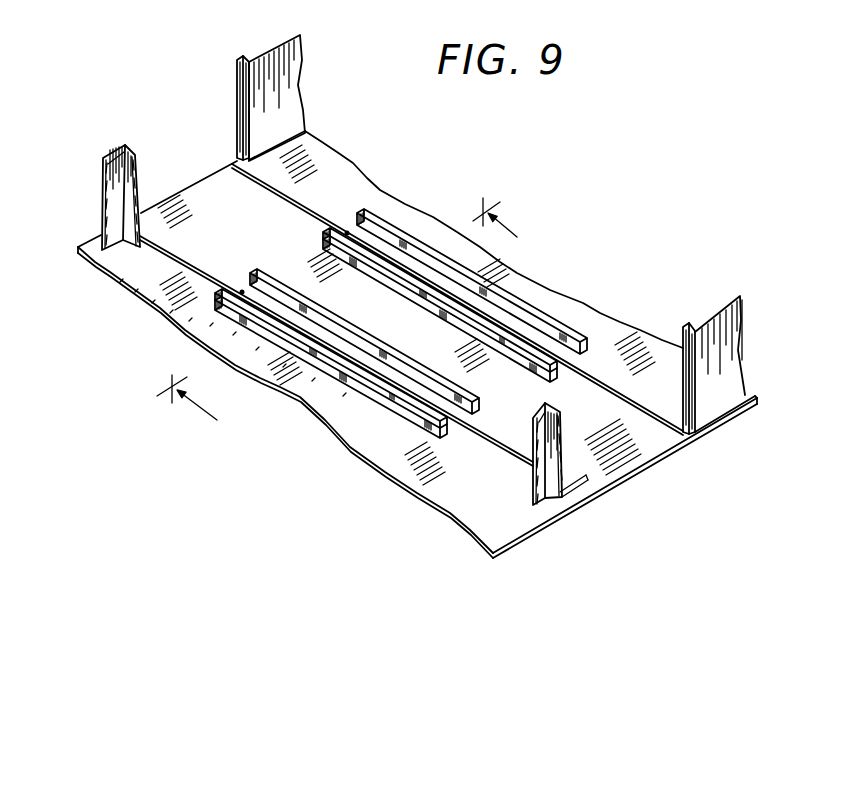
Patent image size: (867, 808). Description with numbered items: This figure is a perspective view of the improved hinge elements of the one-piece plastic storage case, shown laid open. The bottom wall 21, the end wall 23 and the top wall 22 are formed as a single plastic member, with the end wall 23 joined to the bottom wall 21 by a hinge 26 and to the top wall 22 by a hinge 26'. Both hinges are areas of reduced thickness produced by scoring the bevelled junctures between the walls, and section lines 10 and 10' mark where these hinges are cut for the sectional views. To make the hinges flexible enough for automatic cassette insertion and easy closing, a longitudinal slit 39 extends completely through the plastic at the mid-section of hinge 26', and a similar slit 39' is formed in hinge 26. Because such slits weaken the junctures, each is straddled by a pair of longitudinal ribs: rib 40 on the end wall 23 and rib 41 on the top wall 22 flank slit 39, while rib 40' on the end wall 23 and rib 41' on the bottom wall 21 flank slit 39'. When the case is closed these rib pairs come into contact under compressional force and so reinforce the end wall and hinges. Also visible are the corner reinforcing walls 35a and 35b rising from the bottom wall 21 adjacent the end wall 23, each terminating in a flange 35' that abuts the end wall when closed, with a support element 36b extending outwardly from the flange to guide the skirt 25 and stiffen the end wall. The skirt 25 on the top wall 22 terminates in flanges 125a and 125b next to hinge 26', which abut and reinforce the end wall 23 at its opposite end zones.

The section line 10- 10 is at (205, 410).
The section line 10'- 10' is at (517, 226).
The bottom wall 21 is at (128, 273).
The top wall 22 is at (320, 156).
The end wall 23 is at (637, 453).
The skirt 25 is at (288, 77).
The hinge 26 is at (336, 361).
The hinge 26' is at (457, 299).
The flanges 35' is at (350, 280).
The corner reinforcing wall 35a is at (110, 208).
The corner reinforcing wall 35b is at (543, 493).
The support element 36b is at (573, 483).
The longitudinal slit 39 is at (440, 309).
The longitudinal slit 39' is at (331, 367).
The longitudinal rib 40 is at (440, 300).
The longitudinal rib 40' is at (331, 358).
The longitudinal rib 41 is at (472, 266).
The longitudinal rib 41' is at (360, 341).
The flange 125a is at (242, 90).
The flange 125b is at (683, 338).